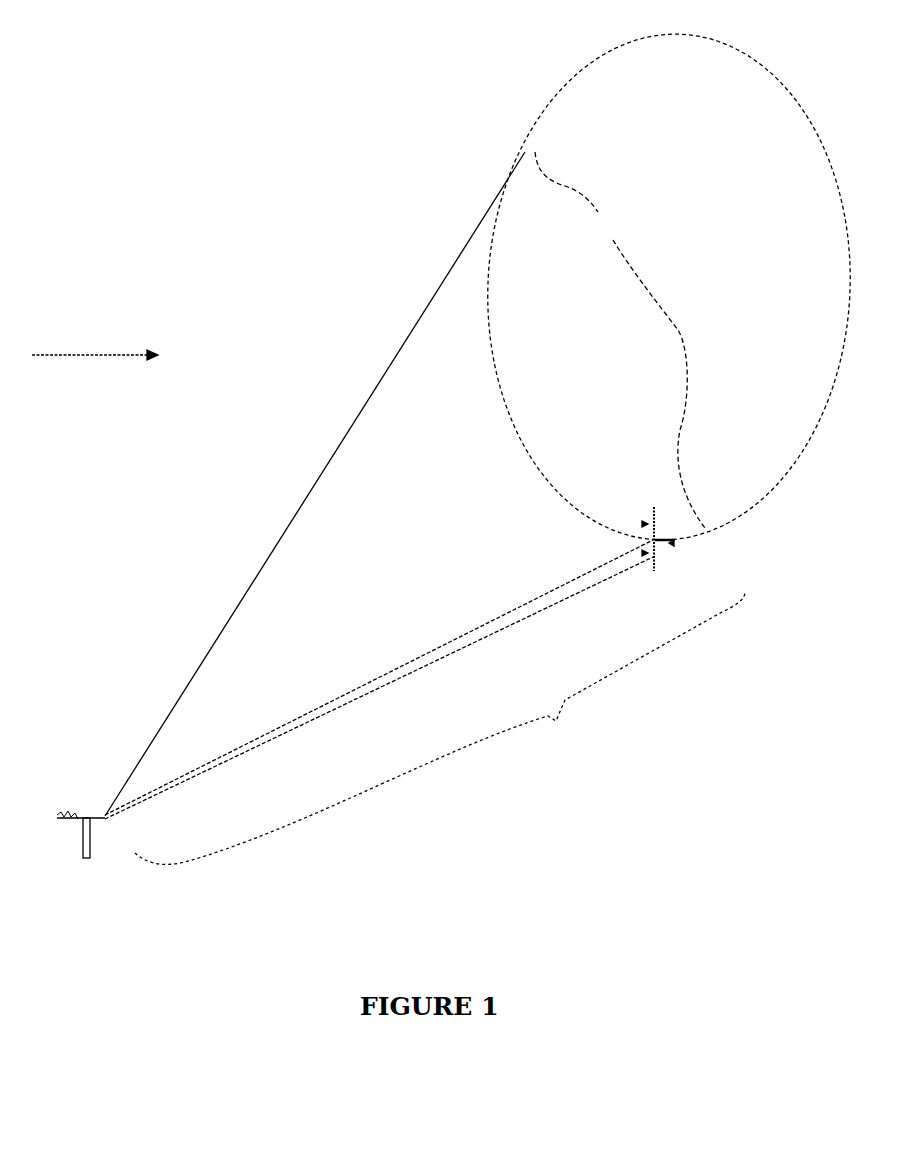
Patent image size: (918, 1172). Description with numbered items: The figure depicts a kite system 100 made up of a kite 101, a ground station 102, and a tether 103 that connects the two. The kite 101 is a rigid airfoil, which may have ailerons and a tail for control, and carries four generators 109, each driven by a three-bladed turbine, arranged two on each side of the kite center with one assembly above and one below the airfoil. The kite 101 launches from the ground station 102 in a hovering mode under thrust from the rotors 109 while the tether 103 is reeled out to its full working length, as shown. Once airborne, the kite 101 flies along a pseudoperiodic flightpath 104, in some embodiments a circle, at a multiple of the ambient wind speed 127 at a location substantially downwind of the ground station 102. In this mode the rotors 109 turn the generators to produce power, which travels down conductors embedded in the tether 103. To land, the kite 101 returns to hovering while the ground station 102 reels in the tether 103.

The kite system 100 is at (440, 728).
The kite 101 is at (673, 540).
The ground station 102 is at (92, 841).
The tether 103 is at (447, 652).
The pseudoperiodic flightpath 104 is at (620, 340).
The generators 109 is at (645, 520).
The ambient wind speed 127 is at (95, 346).